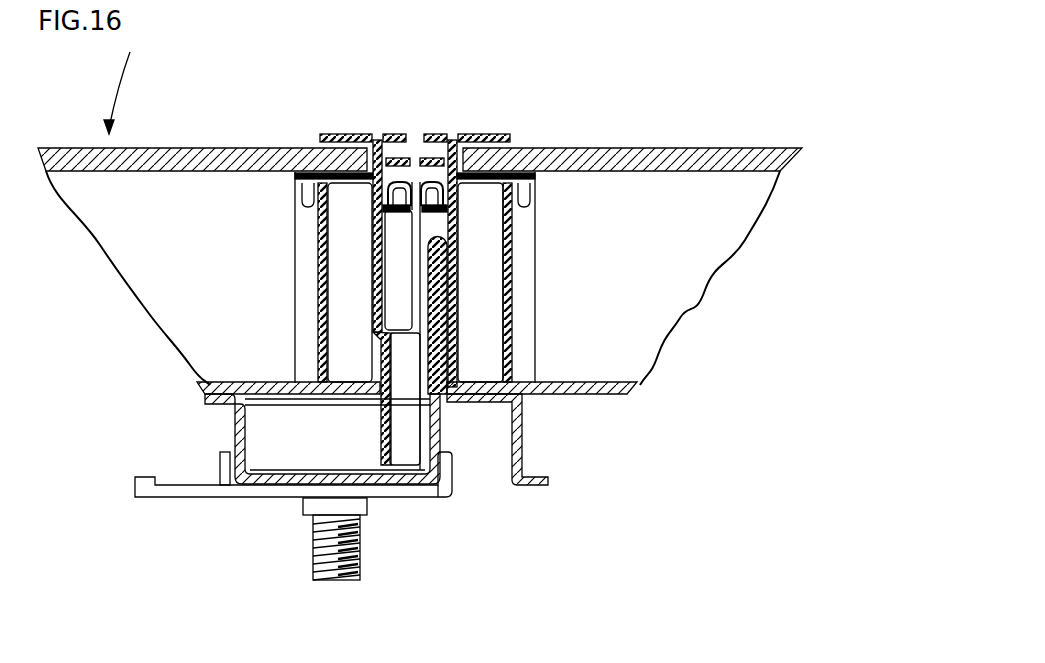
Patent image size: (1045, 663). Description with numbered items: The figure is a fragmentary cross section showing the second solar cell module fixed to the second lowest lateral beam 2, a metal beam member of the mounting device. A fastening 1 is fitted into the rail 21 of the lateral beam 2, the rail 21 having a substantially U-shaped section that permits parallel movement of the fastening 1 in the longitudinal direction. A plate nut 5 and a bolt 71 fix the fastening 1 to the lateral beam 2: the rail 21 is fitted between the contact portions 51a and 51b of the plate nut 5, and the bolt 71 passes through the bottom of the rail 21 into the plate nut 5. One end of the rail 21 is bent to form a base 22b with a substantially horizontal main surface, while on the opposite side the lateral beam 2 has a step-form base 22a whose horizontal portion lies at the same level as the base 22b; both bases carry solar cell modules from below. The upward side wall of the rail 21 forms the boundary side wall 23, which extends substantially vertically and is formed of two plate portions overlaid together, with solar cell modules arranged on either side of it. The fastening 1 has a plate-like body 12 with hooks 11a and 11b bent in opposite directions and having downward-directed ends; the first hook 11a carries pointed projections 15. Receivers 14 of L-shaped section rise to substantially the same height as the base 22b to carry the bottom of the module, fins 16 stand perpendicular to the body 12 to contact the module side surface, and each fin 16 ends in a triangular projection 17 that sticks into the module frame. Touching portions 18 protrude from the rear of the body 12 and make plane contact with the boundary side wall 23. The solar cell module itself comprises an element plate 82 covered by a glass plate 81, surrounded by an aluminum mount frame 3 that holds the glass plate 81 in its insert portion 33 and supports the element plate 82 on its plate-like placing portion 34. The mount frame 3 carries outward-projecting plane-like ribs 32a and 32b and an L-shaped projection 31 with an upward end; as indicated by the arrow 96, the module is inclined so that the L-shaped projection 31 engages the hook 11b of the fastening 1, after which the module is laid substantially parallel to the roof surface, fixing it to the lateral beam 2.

The fastening 1 is at (405, 438).
The lateral beam 2 is at (523, 442).
The mount frame 3 is at (377, 358).
The plate nut 5 is at (187, 492).
The hook 11a is at (440, 186).
The hook 11b is at (392, 185).
The body 12 is at (413, 273).
The receiver 14 is at (297, 398).
The projection 15 is at (432, 210).
The fin 16 is at (408, 408).
The projection 17 is at (377, 330).
The touching portion 18 is at (423, 427).
The rail 21 is at (258, 480).
The base 22a is at (483, 388).
The base 22b is at (217, 398).
The boundary side wall 23 is at (447, 317).
The L-shaped projection 31 is at (397, 203).
The rib 32a is at (400, 134).
The rib 32b is at (398, 158).
The insert portion 33 is at (335, 137).
The placing portion 34 is at (212, 394).
The contact portion 51a is at (448, 468).
The contact portion 51b is at (222, 462).
The bolt 71 is at (329, 570).
The glass plate 81 is at (165, 148).
The element plate 82 is at (137, 183).
The arrow 96 is at (112, 90).